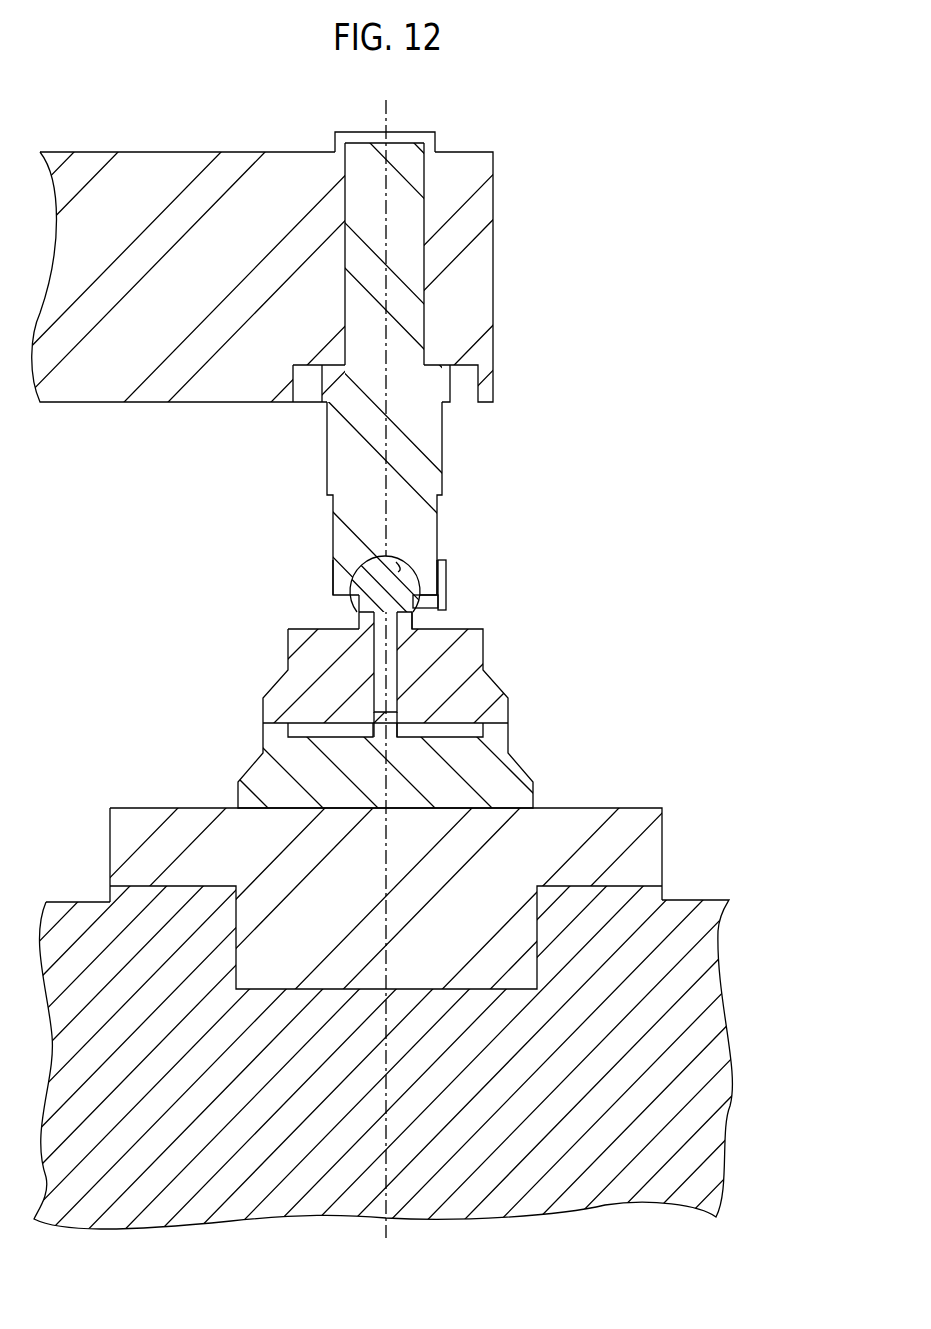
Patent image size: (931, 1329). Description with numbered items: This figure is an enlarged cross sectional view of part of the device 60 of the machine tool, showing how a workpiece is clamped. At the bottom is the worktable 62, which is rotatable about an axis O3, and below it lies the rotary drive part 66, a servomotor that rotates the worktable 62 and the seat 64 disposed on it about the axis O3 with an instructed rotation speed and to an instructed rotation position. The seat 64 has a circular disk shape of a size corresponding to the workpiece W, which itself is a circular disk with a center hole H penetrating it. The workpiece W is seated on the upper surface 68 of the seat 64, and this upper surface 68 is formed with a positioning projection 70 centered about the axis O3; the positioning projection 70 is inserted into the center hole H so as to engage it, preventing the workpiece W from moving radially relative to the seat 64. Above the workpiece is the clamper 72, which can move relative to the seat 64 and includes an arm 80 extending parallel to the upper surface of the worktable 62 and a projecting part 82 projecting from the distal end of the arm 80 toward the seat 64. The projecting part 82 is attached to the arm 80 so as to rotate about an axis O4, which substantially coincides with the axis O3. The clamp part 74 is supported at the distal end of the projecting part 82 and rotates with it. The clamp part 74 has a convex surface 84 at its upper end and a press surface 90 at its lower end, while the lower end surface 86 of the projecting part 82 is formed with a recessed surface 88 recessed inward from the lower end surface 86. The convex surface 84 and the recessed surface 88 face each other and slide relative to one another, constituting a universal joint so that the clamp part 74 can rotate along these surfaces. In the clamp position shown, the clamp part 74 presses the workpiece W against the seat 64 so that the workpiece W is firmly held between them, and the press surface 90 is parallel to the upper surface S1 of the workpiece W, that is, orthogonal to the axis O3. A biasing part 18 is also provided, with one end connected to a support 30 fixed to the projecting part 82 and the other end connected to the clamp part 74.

The device 60 is at (592, 174).
The clamper 72 is at (115, 131).
The arm 80 is at (278, 168).
The projecting part 82 is at (443, 440).
The convex surface 84 is at (334, 534).
The lower end surface 86 is at (358, 597).
The recessed surface 88 is at (400, 565).
The clamp part 74 is at (357, 610).
The support 30 is at (446, 584).
The biasing part 18 is at (414, 608).
The upper surface of the workpiece S1 is at (358, 612).
The workpiece W is at (487, 647).
The center hole H is at (377, 672).
The press surface 90 is at (414, 631).
The upper surface 68 is at (263, 712).
The seat 64 is at (509, 742).
The positioning projection 70 is at (382, 727).
The worktable 62 is at (663, 846).
The rotary drive part 66 is at (676, 1092).
The axis O4 is at (387, 342).
The axis O3 is at (387, 1125).